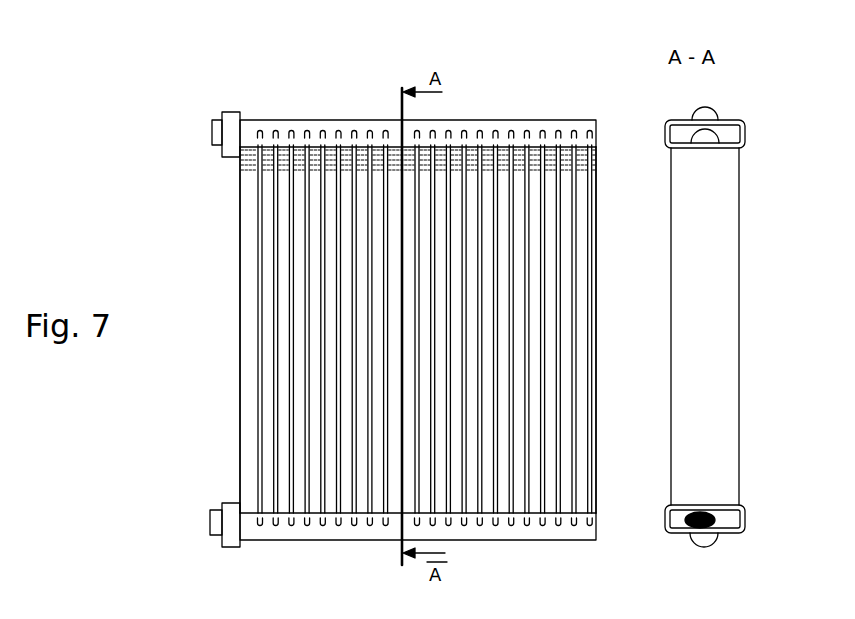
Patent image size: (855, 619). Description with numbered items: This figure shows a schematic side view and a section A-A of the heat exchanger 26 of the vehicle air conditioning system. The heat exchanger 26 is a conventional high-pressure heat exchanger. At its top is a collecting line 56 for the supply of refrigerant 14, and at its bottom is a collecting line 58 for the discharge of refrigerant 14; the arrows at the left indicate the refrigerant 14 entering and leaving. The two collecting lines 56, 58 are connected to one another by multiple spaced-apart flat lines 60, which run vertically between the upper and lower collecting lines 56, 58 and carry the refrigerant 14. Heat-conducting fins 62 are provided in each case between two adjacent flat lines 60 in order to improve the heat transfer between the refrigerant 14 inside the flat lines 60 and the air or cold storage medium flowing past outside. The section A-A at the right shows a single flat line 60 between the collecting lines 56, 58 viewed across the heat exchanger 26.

The refrigerant 14 is at (196, 132).
The heat exchanger 26 is at (560, 80).
The collecting line 56 is at (328, 121).
The collecting line 58 is at (326, 532).
The flat lines 60 is at (528, 292).
The heat-conducting fins 62 is at (536, 170).